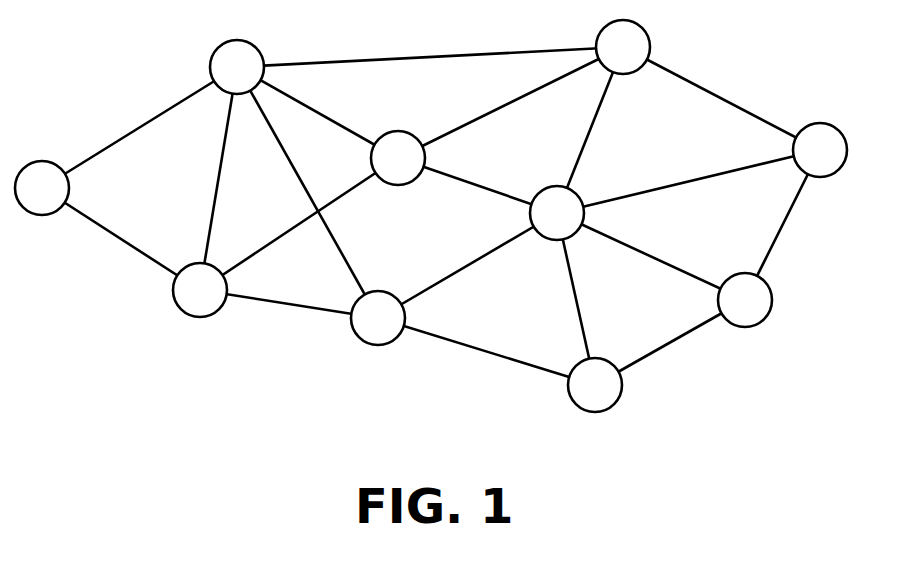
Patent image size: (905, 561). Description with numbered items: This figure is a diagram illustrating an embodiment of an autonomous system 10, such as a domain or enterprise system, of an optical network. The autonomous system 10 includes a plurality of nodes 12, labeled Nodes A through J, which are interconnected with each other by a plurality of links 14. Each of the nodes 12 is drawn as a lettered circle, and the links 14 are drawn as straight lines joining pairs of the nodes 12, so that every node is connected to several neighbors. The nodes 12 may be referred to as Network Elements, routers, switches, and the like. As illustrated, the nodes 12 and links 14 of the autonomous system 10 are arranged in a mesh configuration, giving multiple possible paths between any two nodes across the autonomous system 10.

The autonomous system 10 is at (431, 273).
The nodes 12 is at (210, 60).
The links 14 is at (123, 138).